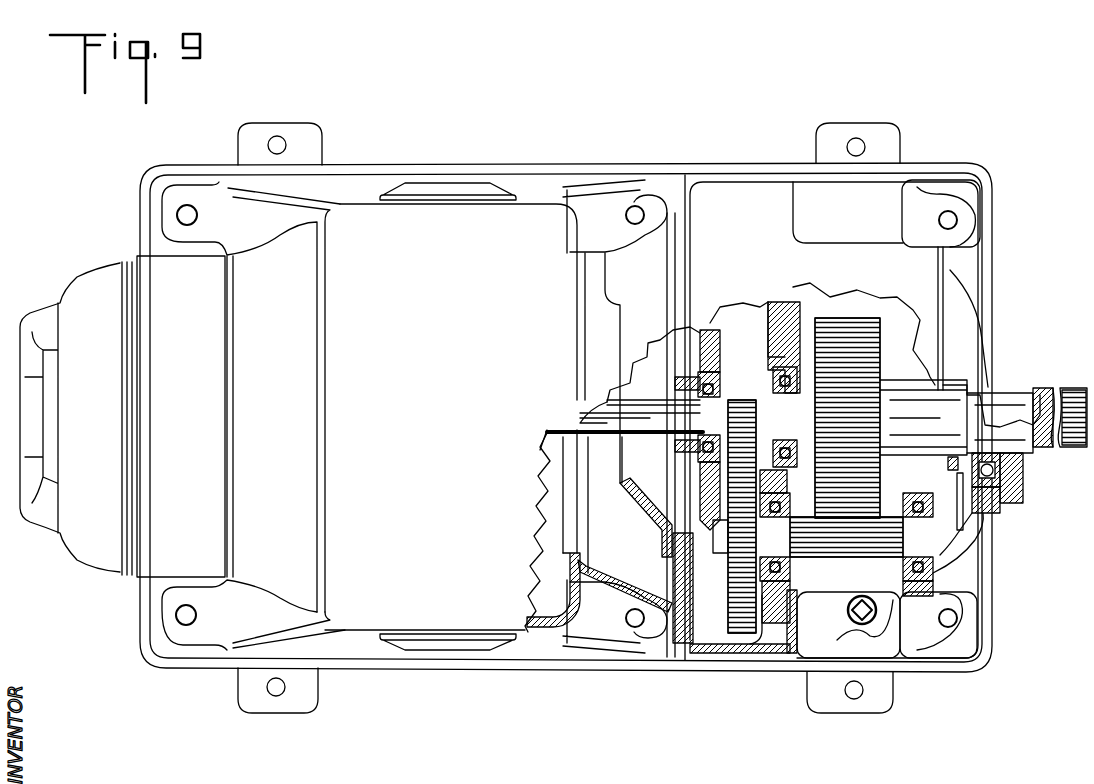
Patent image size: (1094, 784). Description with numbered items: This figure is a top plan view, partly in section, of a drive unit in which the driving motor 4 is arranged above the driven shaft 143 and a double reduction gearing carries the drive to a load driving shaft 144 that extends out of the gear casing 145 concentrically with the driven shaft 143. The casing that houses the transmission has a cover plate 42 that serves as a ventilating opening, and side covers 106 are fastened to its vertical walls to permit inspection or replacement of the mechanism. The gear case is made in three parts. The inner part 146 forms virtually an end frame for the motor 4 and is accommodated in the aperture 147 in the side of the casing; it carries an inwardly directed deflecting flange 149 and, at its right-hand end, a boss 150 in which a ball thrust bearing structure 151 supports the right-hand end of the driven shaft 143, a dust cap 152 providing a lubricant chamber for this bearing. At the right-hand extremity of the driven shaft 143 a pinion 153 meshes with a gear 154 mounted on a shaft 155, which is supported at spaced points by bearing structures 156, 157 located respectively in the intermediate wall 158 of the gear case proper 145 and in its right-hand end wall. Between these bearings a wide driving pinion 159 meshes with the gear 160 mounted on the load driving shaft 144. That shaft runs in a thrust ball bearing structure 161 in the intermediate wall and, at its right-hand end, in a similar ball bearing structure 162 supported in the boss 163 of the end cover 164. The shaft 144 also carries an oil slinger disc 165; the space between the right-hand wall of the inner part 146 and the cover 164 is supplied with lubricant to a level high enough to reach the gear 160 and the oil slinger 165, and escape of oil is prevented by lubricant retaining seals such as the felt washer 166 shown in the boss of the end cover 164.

The motor 4 is at (182, 418).
The cover plate 42 is at (607, 286).
The side cover 106 is at (498, 148).
The driven shaft 143 is at (583, 427).
The load driving shaft 144 is at (1045, 390).
The gear casing 145 is at (865, 245).
The inner part 146 is at (600, 580).
The aperture 147 is at (580, 552).
The deflecting flange 149 is at (625, 495).
The boss 150 is at (705, 345).
The ball thrust bearing structure 151 is at (703, 487).
The dust cap 152 is at (690, 455).
The pinion 153 is at (742, 410).
The gear 154 is at (742, 640).
The shaft 155 is at (790, 553).
The bearing structure 156 is at (817, 595).
The bearing structure 157 is at (918, 600).
The intermediate wall 158 is at (793, 305).
The wide driving pinion 159 is at (872, 540).
The gear 160 is at (868, 347).
The thrust ball bearing structure 161 is at (778, 310).
The ball bearing structure 162 is at (985, 513).
The boss 163 is at (1000, 497).
The end cover 164 is at (958, 298).
The oil slinger disc 165 is at (978, 540).
The felt washer 166 is at (1012, 460).